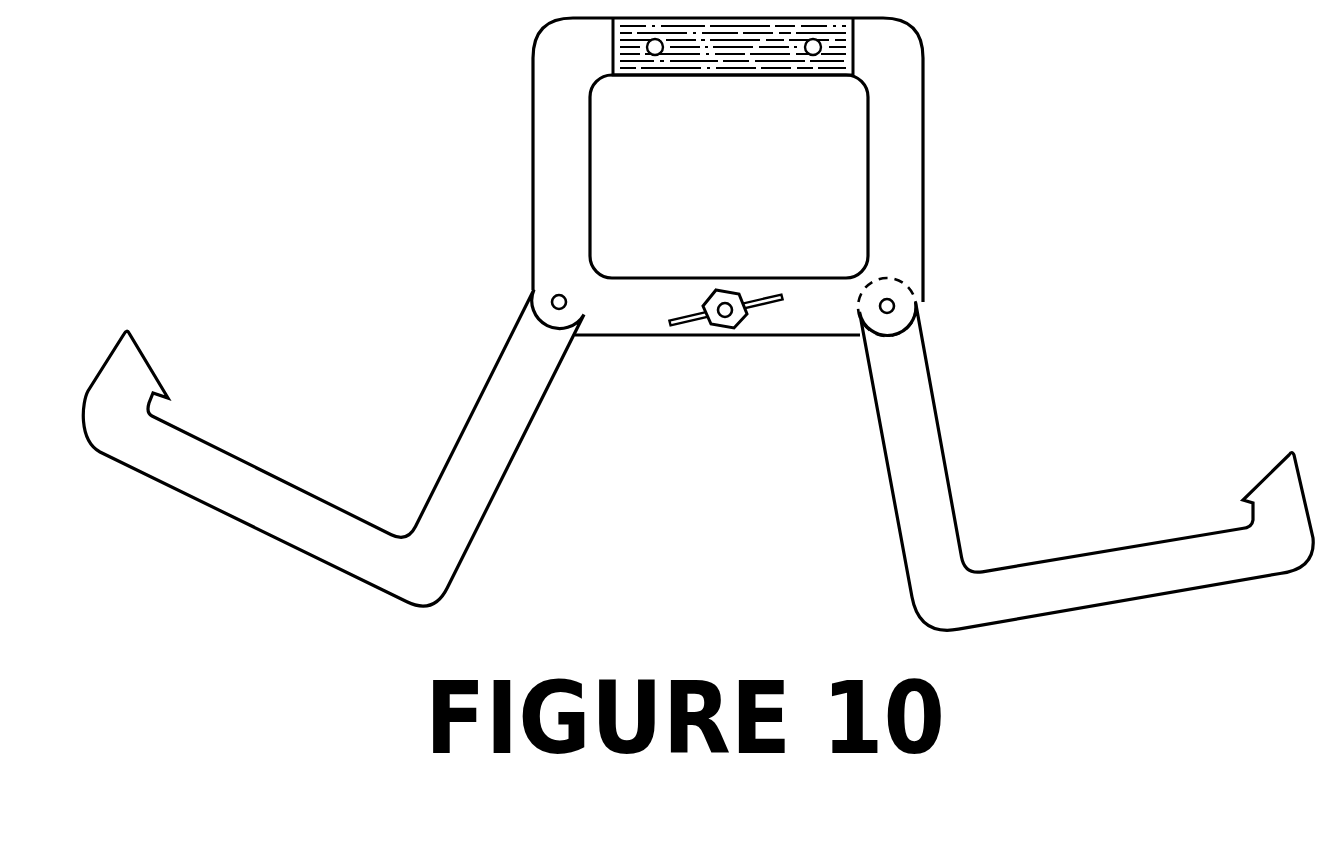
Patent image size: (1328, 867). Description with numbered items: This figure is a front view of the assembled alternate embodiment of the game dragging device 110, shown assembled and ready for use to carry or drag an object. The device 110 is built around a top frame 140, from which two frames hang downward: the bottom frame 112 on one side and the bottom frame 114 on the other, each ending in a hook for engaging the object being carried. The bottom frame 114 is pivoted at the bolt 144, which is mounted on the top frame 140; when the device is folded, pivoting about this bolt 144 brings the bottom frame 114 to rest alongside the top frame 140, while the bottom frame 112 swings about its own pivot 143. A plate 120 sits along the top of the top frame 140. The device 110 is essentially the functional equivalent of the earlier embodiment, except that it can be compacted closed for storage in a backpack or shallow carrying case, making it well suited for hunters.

The game dragging device 110 is at (464, 234).
The bottom frame 112 is at (513, 420).
The bottom frame 114 is at (920, 390).
The mounting plate 120 is at (819, 65).
The top frame 140 is at (905, 170).
The pivot 143 is at (898, 300).
The bolt 144 is at (731, 327).